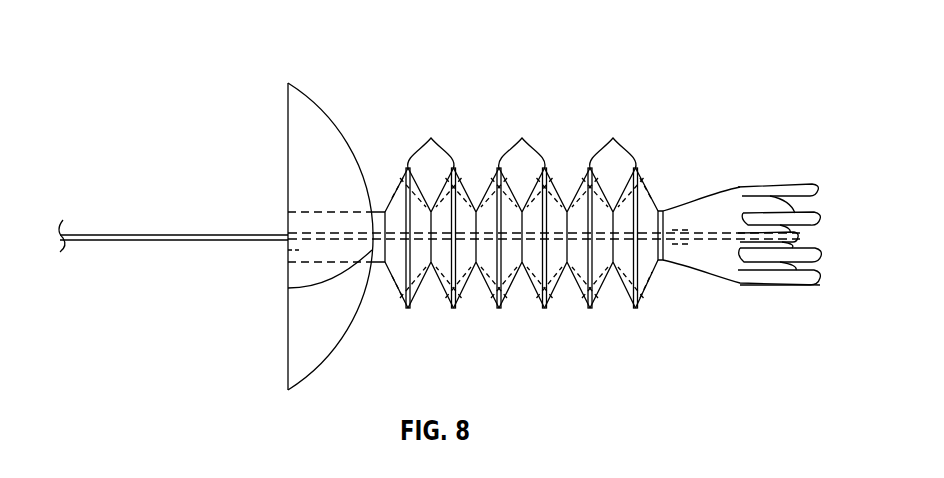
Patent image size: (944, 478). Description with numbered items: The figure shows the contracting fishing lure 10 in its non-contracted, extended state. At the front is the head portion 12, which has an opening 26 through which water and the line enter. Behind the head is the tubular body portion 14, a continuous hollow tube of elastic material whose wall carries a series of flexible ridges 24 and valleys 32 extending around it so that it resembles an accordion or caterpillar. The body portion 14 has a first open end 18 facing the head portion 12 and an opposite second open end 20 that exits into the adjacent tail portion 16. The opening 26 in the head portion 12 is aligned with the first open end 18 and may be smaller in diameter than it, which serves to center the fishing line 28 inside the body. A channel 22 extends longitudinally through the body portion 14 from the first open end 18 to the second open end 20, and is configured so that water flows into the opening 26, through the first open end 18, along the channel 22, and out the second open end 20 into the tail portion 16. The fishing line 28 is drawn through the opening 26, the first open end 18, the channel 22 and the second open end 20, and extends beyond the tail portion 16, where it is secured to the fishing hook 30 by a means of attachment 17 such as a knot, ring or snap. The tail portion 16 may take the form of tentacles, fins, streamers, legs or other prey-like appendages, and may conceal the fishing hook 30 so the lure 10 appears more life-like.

The fishing lure 10 is at (672, 87).
The head portion 12 is at (288, 322).
The body portion 14 is at (578, 289).
The tail portion 16 is at (698, 211).
The means of attachment 17 is at (645, 215).
The first open end 18 is at (288, 288).
The second open end 20 is at (670, 258).
The channel 22 is at (369, 224).
The flexible ridges 24 is at (522, 140).
The opening 26 is at (288, 250).
The fishing line 28 is at (194, 234).
The fishing hook 30 is at (757, 189).
The valleys 32 is at (431, 264).